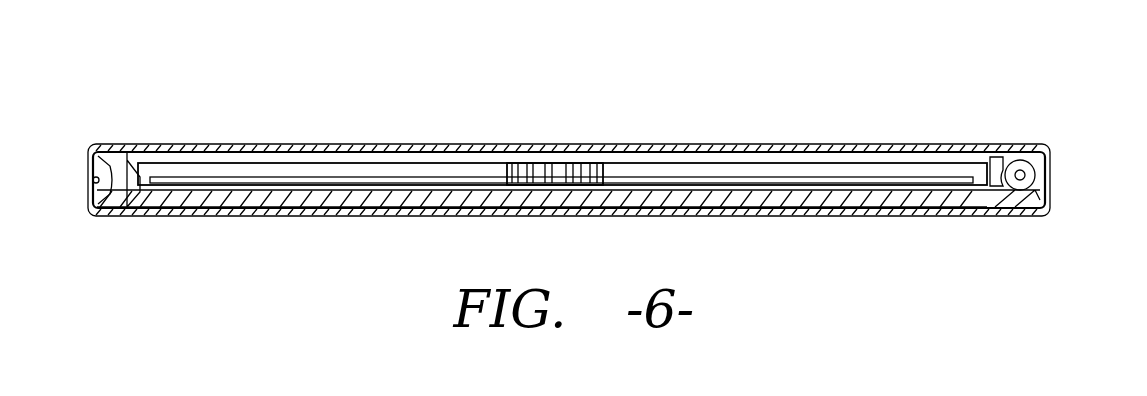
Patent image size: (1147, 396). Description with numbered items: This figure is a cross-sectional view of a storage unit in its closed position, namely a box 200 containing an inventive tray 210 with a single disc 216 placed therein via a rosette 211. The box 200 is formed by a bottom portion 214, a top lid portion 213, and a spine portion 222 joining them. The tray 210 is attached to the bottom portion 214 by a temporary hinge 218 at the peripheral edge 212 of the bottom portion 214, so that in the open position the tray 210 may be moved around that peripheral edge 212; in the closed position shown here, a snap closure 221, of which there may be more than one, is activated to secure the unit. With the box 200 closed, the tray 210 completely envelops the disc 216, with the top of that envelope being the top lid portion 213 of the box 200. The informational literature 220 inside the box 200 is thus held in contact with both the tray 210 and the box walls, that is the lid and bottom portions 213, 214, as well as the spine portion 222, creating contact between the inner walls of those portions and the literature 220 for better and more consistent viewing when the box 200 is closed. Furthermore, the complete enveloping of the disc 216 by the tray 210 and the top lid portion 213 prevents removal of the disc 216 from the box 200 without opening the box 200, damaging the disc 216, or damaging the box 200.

The box 200 is at (921, 94).
The tray 210 is at (222, 168).
The rosette 211 is at (556, 170).
The peripheral edge 212 is at (1047, 195).
The top lid portion 213 is at (326, 146).
The bottom portion 214 is at (972, 214).
The disc 216 is at (422, 178).
The temporary hinge 218 is at (1030, 149).
The informational literature 220 is at (96, 181).
The snap closure 221 is at (1047, 178).
The spine portion 222 is at (86, 158).